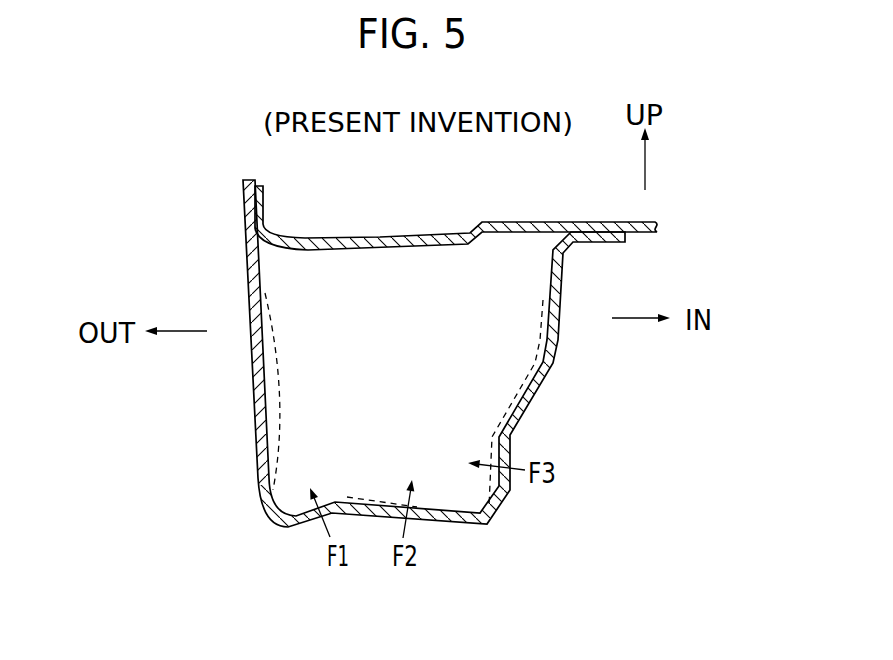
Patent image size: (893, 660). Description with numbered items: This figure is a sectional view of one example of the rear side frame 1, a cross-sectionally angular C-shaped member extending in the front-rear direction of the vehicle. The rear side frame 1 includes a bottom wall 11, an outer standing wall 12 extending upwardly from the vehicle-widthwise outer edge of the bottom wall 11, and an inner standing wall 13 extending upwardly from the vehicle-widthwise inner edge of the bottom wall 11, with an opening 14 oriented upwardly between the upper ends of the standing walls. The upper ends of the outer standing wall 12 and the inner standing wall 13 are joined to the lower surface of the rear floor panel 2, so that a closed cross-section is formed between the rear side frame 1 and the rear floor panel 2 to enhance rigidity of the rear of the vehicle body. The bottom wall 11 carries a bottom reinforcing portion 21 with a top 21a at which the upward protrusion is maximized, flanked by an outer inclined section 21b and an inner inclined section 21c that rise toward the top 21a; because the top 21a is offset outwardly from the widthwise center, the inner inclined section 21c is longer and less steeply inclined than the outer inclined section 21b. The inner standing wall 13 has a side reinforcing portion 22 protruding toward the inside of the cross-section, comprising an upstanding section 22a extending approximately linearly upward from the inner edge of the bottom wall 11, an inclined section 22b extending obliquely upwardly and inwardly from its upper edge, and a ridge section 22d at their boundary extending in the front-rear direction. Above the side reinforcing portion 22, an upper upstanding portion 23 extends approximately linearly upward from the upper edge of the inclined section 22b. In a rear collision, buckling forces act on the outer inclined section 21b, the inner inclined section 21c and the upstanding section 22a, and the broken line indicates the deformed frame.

The rear side frame 1 is at (251, 393).
The outer standing wall 12 is at (341, 400).
The rear floor panel 2 is at (448, 232).
The opening 14 is at (382, 258).
The upper upstanding portion 23 is at (562, 278).
The inner standing wall 13 is at (558, 330).
The side reinforcing portion 22 is at (519, 432).
The upstanding section 22a is at (510, 495).
The inclined section 22b is at (537, 393).
The ridge section 22d is at (510, 437).
The bottom reinforcing portion 21 is at (387, 514).
The top 21a is at (334, 499).
The outer inclined section 21b is at (315, 527).
The inner inclined section 21c is at (436, 523).
The bottom wall 11 is at (458, 523).